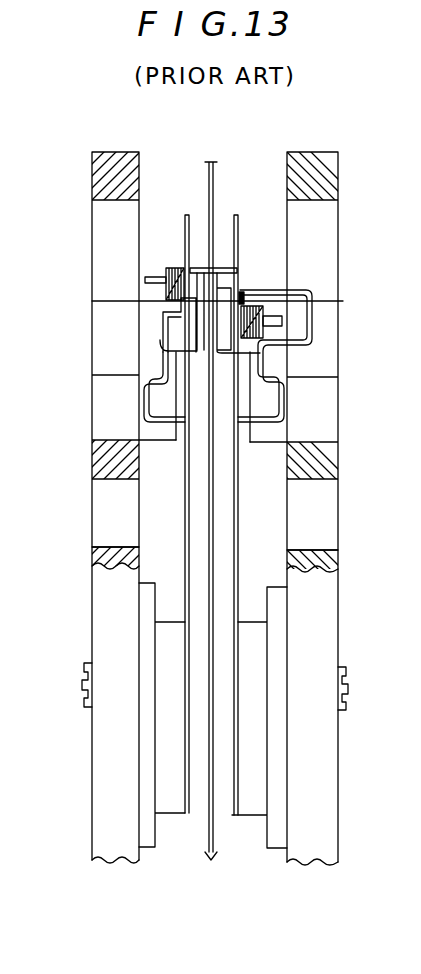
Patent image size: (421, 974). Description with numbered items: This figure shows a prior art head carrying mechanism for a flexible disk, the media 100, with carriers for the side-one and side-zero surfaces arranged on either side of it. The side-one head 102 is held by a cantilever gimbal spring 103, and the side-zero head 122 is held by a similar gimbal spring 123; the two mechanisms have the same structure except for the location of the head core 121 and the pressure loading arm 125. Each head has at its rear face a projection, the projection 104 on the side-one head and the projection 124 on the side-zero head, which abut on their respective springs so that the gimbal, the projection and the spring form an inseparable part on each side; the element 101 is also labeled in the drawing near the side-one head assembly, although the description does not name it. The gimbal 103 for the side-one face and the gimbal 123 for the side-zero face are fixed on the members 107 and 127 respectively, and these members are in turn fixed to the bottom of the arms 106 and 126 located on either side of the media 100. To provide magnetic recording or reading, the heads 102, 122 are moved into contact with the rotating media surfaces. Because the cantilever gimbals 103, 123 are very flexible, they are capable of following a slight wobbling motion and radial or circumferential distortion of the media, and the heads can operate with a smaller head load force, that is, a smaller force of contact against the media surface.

The media 100 is at (216, 215).
The spring member 101 is at (174, 270).
The side 1 head 102 is at (198, 292).
The gimbal spring 103 is at (183, 512).
The projection 104 is at (190, 268).
The arm 106 is at (105, 558).
The member 107 is at (173, 808).
The head core 121 is at (292, 292).
The side 0 head 122 is at (242, 292).
The gimbal spring 123 is at (233, 497).
The projection 124 is at (242, 267).
The pressure loading arm 125 is at (268, 315).
The arm 126 is at (325, 556).
The member 127 is at (250, 808).